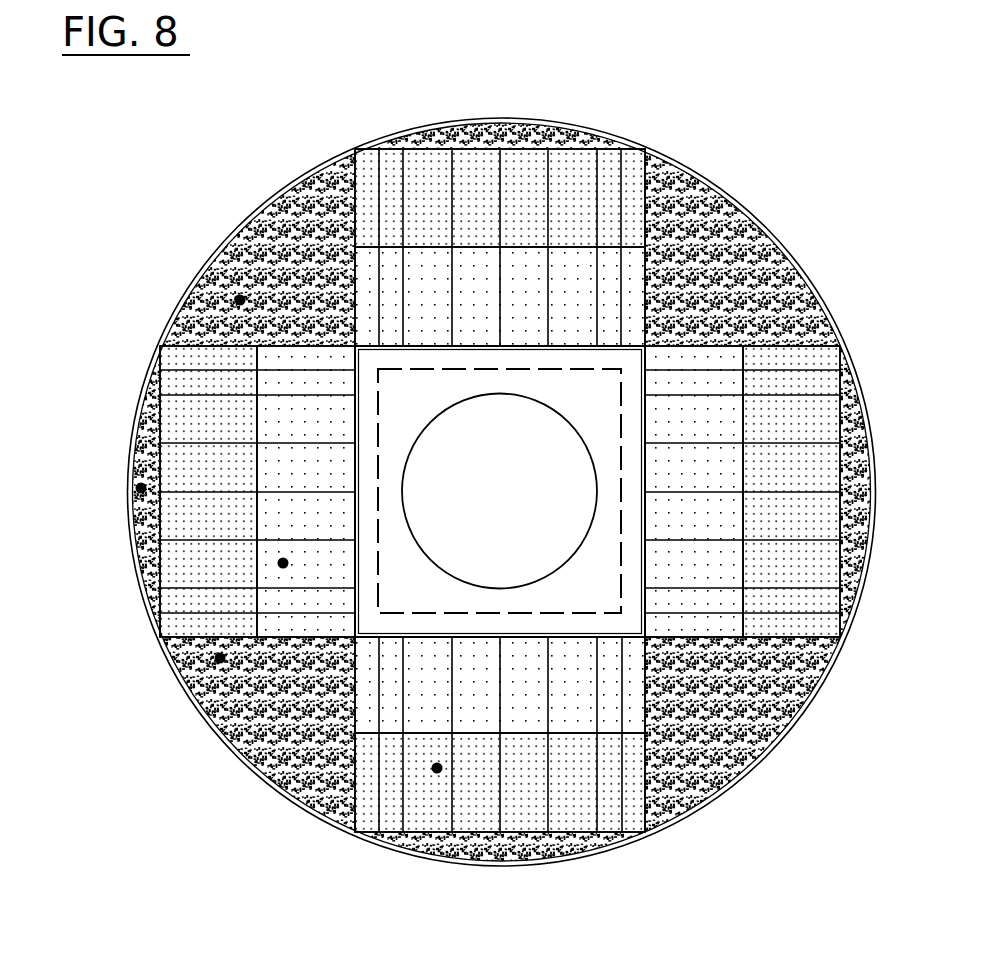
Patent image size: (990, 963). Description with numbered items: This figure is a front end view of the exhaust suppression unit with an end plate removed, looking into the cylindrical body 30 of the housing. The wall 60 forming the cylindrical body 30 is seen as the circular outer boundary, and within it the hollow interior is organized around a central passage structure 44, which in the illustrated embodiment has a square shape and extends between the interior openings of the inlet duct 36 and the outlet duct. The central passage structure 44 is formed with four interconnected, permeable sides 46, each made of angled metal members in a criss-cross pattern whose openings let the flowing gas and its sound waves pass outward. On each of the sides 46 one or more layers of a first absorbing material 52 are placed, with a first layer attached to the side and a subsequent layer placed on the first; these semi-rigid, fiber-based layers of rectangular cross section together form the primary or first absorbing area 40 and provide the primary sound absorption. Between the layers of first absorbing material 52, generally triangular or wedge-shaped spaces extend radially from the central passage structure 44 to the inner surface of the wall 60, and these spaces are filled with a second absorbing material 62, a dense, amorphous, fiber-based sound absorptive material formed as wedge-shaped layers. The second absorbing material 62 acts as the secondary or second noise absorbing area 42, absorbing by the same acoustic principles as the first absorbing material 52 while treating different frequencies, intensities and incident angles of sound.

The cylindrical body 30 is at (516, 492).
The inlet duct 36 is at (613, 624).
The first absorbing area 40 is at (437, 768).
The second noise absorbing area 42 is at (220, 658).
The central passage structure 44 is at (643, 491).
The permeable sides 46 is at (570, 488).
The first absorbing material 52 is at (504, 487).
The wall 60 is at (522, 492).
The second absorbing material 62 is at (499, 486).